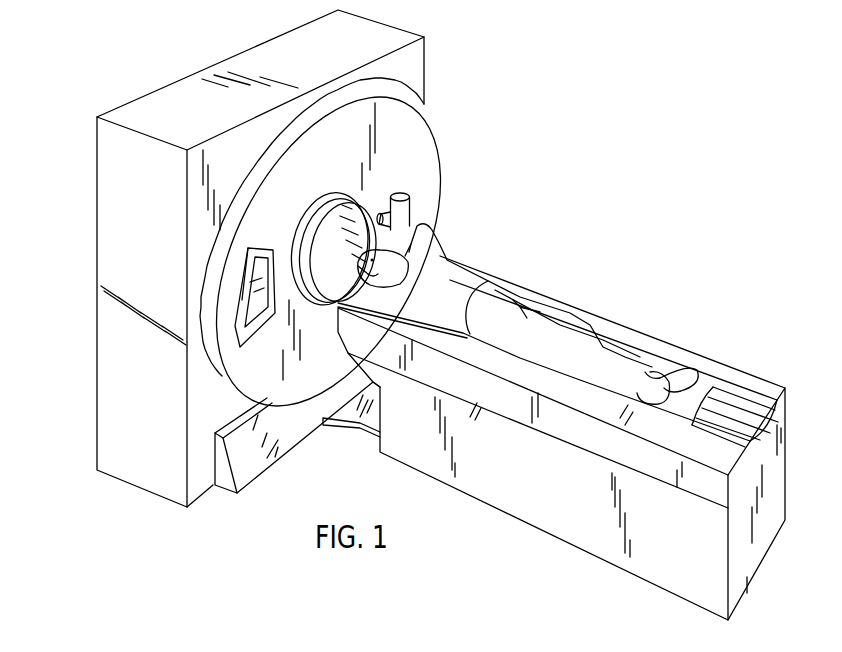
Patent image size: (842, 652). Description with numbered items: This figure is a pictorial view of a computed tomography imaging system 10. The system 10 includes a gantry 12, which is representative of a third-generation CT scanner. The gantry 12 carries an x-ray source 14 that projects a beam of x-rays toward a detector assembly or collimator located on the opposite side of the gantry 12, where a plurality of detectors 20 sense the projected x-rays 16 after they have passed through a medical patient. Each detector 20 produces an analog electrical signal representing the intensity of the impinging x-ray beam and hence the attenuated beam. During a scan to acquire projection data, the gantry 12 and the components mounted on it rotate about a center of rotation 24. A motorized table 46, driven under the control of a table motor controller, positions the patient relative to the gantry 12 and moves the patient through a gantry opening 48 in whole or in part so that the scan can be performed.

The computed tomography (CT) imaging system 10 is at (537, 146).
The gantry 12 is at (422, 168).
The x-ray source 14 is at (418, 222).
The projected x-rays 16 is at (257, 322).
The detectors 20 is at (267, 250).
The center of rotation 24 is at (464, 280).
The motorized table 46 is at (548, 516).
The gantry opening 48 is at (322, 240).